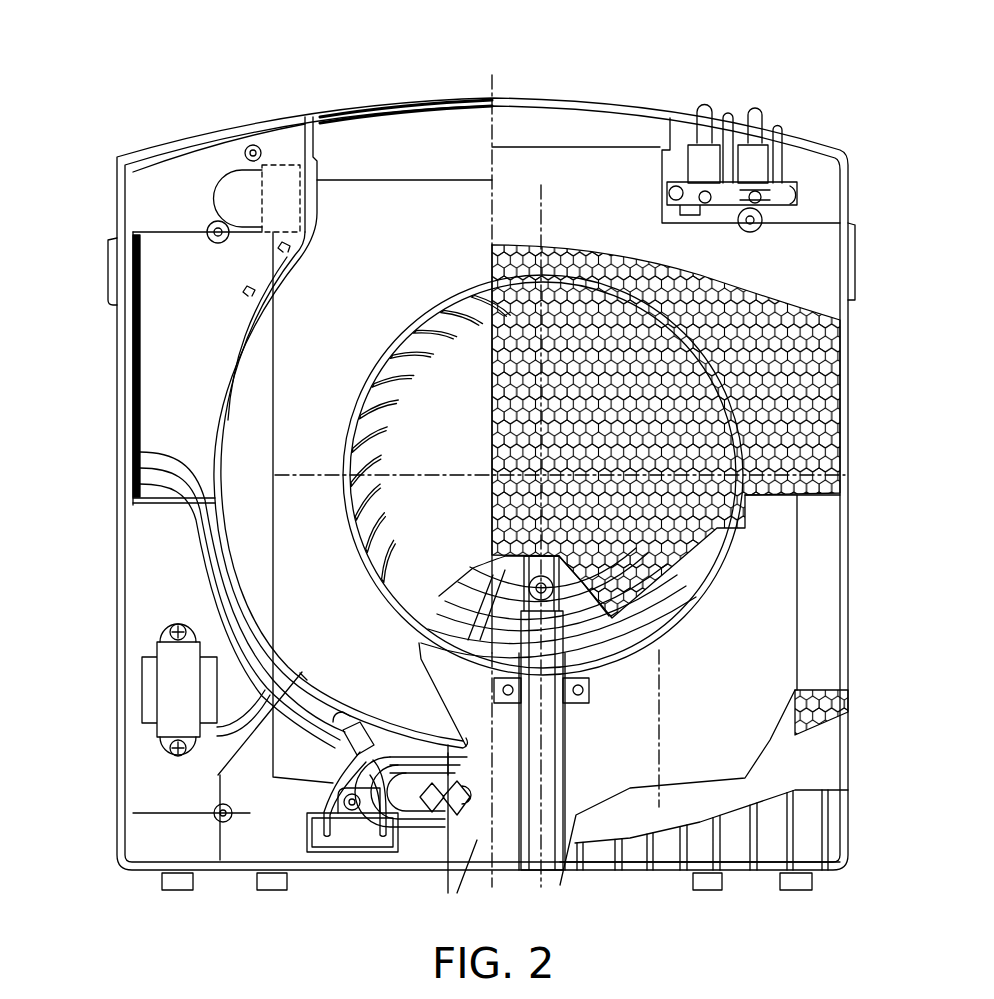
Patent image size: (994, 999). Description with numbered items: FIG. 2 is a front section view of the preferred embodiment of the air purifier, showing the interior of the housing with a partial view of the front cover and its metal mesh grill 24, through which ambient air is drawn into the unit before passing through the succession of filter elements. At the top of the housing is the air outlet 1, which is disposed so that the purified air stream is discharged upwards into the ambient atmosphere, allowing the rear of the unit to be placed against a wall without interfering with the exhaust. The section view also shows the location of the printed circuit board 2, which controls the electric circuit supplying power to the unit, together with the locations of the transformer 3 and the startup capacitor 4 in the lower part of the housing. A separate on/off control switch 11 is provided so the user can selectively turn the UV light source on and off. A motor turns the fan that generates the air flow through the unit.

The air outlet 1 is at (372, 102).
The printed circuit board 2 is at (135, 356).
The transformer 3 is at (165, 656).
The startup capacitor 4 is at (345, 838).
The on/off control switch 11 is at (760, 148).
The metal mesh grill 24 is at (740, 426).